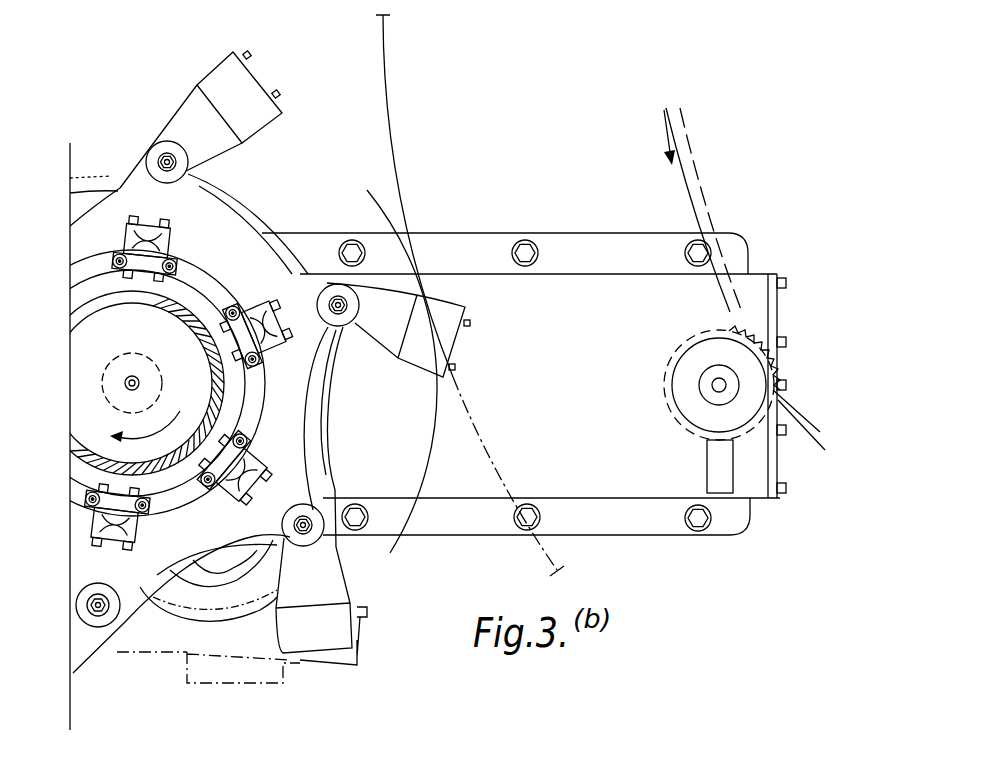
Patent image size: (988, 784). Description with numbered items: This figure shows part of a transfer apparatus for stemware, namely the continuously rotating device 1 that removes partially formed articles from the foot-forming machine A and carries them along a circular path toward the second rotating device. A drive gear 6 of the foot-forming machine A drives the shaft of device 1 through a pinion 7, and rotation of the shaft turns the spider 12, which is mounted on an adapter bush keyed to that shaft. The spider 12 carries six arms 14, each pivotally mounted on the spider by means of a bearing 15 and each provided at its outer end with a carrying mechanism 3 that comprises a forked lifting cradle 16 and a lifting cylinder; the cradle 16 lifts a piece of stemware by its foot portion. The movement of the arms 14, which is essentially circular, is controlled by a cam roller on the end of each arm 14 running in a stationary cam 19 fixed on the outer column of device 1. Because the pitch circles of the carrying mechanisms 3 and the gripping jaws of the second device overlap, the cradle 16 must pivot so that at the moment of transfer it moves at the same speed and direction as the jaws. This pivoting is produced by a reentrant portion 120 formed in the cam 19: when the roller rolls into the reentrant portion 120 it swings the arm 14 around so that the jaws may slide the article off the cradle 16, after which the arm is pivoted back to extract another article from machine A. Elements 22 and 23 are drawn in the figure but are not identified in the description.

The rotary device 1 is at (109, 142).
The carrying mechanism 3 is at (282, 81).
The drive gear 6 is at (690, 199).
The pinion 7 is at (698, 345).
The spider 12 is at (266, 297).
The arm 14 is at (399, 328).
The bearing 15 is at (313, 510).
The forked lifting cradle 16 is at (456, 366).
The stationary cam 19 is at (258, 237).
The clamp 22 is at (94, 268).
The gear wheel 23 is at (161, 345).
The reentrant portion 120 is at (170, 590).
The foot-forming machine A is at (730, 134).